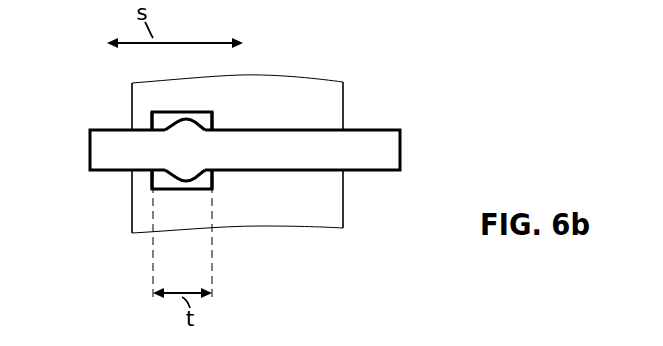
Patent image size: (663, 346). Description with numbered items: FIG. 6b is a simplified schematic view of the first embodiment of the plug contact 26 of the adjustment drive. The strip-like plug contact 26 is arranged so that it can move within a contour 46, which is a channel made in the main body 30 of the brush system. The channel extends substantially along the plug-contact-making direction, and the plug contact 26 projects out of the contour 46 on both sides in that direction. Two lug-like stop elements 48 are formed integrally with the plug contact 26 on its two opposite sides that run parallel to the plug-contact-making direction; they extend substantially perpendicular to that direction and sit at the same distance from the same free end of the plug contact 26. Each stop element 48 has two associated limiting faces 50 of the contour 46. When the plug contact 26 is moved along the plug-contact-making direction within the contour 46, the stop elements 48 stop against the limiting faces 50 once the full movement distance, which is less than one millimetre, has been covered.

The plug contact 26 is at (388, 145).
The main body 30 is at (333, 108).
The contour 46 is at (287, 129).
The stop elements 48 is at (187, 122).
The limiting faces 50 is at (152, 118).